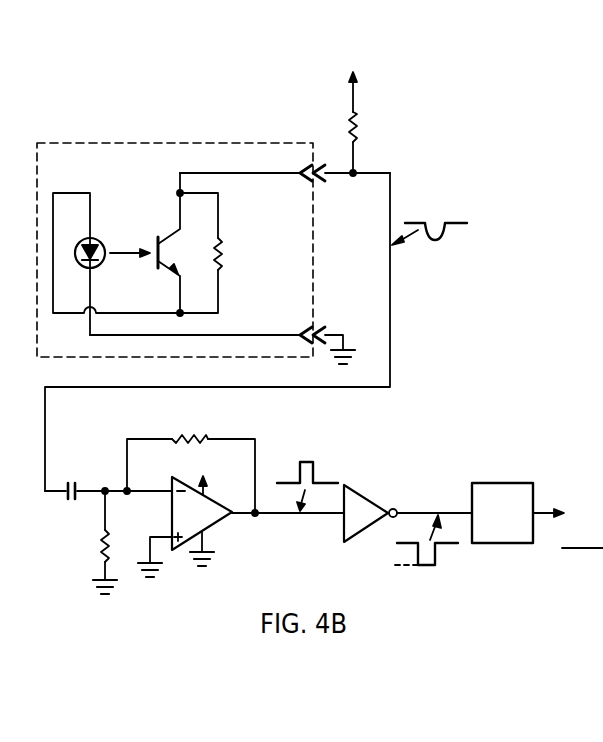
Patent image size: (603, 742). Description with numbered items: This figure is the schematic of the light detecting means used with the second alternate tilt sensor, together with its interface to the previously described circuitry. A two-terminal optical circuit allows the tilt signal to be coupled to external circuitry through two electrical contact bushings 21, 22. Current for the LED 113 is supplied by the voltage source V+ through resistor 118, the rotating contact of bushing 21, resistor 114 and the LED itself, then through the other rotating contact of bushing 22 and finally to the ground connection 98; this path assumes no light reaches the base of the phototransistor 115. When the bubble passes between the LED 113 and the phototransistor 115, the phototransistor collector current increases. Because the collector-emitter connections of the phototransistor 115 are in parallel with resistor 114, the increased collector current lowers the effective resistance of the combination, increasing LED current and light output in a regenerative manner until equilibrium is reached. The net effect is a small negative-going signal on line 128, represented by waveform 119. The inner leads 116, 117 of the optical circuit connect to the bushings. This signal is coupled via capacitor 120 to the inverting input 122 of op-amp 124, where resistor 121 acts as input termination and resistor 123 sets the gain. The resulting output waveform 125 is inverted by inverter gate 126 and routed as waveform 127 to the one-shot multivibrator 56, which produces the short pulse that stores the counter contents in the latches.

The electrical contact bushing 21 is at (300, 170).
The electrical contact bushing 22 is at (300, 332).
The one-shot multivibrator 56 is at (496, 495).
The ground connection 98 is at (345, 347).
The LED 113 is at (100, 240).
The resistor 114 is at (232, 254).
The phototransistor 115 is at (152, 258).
The ground lead 116 is at (246, 333).
The signal lead 117 is at (245, 176).
The resistor 118 is at (365, 114).
The waveform 119 is at (429, 220).
The capacitor 120 is at (77, 480).
The resistor 121 is at (96, 542).
The inverting input 122 is at (170, 485).
The resistor 123 is at (191, 463).
The op-amp 124 is at (215, 518).
The output waveform 125 is at (316, 458).
The inverter gate 126 is at (363, 508).
The waveform 127 is at (448, 547).
The line 128 is at (392, 292).